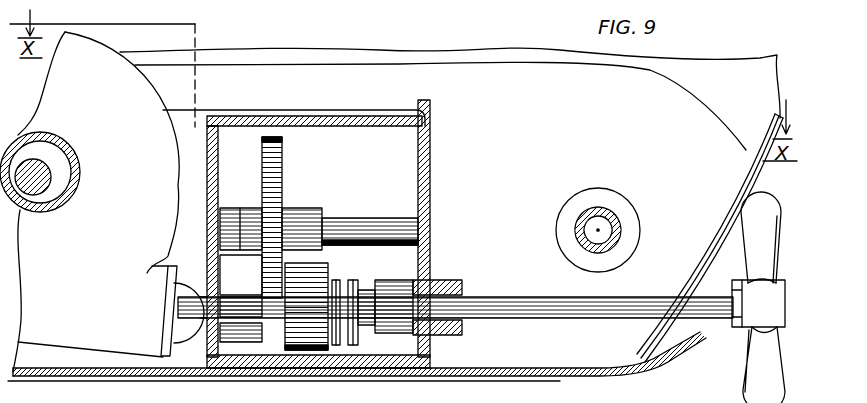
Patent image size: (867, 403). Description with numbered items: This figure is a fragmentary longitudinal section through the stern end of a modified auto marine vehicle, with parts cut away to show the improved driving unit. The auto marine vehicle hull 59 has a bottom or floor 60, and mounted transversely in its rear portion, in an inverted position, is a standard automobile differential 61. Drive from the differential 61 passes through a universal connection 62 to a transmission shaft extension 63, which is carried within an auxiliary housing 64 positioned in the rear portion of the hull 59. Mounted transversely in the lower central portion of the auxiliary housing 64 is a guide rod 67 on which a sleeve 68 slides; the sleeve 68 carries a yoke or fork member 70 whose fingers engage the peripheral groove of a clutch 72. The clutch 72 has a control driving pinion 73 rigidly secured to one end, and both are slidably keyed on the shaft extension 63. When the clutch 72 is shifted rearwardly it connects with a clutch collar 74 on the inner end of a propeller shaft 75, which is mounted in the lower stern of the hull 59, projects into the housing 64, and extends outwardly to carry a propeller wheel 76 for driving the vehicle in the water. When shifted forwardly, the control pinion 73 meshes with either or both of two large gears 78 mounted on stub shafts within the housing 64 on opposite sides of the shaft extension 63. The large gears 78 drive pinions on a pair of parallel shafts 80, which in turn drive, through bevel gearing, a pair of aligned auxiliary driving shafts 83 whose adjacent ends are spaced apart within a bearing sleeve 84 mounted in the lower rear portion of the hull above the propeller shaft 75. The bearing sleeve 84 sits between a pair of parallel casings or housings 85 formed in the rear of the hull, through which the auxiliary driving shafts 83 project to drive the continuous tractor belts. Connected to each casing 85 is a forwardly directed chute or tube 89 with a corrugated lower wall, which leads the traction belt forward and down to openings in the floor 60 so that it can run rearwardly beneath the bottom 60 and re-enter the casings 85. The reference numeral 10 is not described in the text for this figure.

The frame base 10 is at (530, 402).
The auto marine vehicle hull 59 is at (441, 57).
The bottom or floor 60 is at (130, 368).
The standard automobile differential 61 is at (89, 202).
The universal connection 62 is at (186, 313).
The transmission shaft extension 63 is at (238, 312).
The auxiliary housing 64 is at (431, 203).
The guide rod 67 is at (232, 345).
The sleeve 68 is at (435, 390).
The yoke or fork member 70 is at (334, 346).
The clutch 72 is at (380, 298).
The control driving pinion 73 is at (312, 290).
The clutch collar 74 is at (420, 291).
The propeller shaft 75 is at (536, 282).
The propeller wheel 76 is at (756, 371).
The large gears 78 is at (283, 175).
The parallel shafts 80 is at (352, 237).
The auxiliary driving shafts 83 is at (616, 252).
The bearing sleeve 84 is at (610, 240).
The casings or housings 85 is at (646, 238).
The chute or tube 89 is at (294, 102).